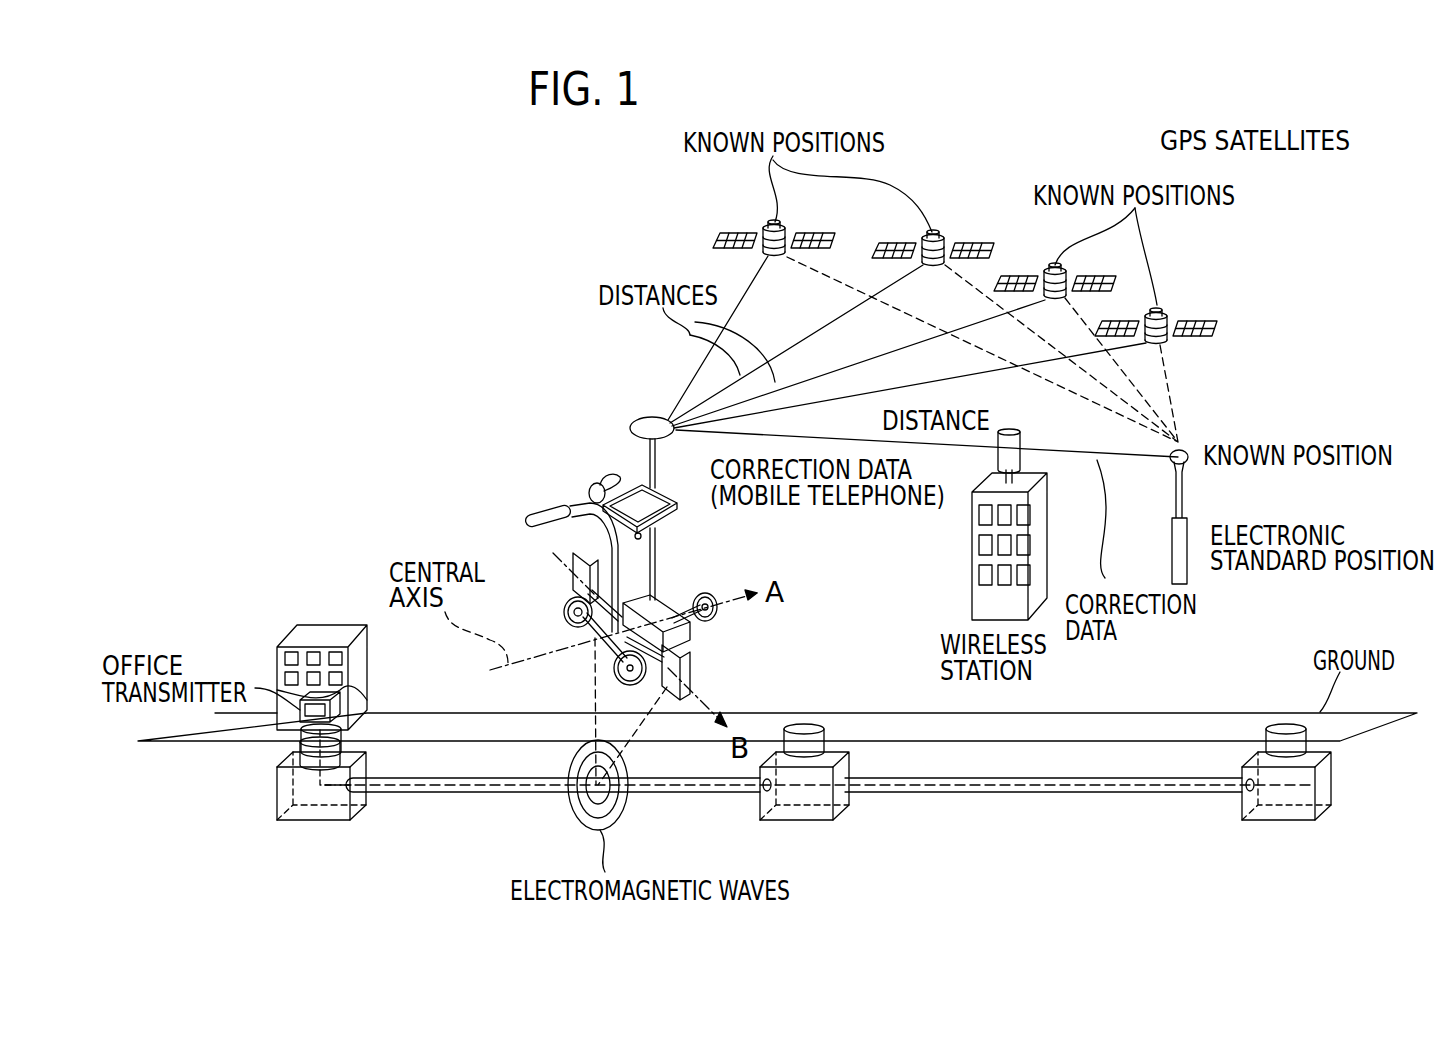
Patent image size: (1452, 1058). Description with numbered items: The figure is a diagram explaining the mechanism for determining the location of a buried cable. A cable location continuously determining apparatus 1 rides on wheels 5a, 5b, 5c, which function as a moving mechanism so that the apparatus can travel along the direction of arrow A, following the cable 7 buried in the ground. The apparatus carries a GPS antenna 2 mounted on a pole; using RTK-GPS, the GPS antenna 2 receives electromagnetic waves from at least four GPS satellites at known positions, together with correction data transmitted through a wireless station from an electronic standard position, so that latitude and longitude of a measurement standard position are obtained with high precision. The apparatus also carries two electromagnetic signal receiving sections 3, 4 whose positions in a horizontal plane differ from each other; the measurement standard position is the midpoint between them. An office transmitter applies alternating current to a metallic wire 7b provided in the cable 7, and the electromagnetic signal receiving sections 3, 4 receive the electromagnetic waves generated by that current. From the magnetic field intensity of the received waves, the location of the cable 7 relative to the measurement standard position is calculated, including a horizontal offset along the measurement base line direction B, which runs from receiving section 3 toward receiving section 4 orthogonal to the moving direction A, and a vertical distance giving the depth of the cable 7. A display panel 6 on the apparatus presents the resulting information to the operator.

The cable location continuously determining apparatus 1 is at (618, 520).
The GPS antenna 2 is at (640, 418).
The electromagnetic signal receiving section 3 is at (575, 566).
The electromagnetic signal receiving section 4 is at (688, 665).
The wheel 5a is at (700, 594).
The wheel 5b is at (566, 606).
The wheel 5c is at (614, 680).
The display panel 6 is at (597, 488).
The cable 7 is at (412, 795).
The metallic wire 7b is at (498, 792).